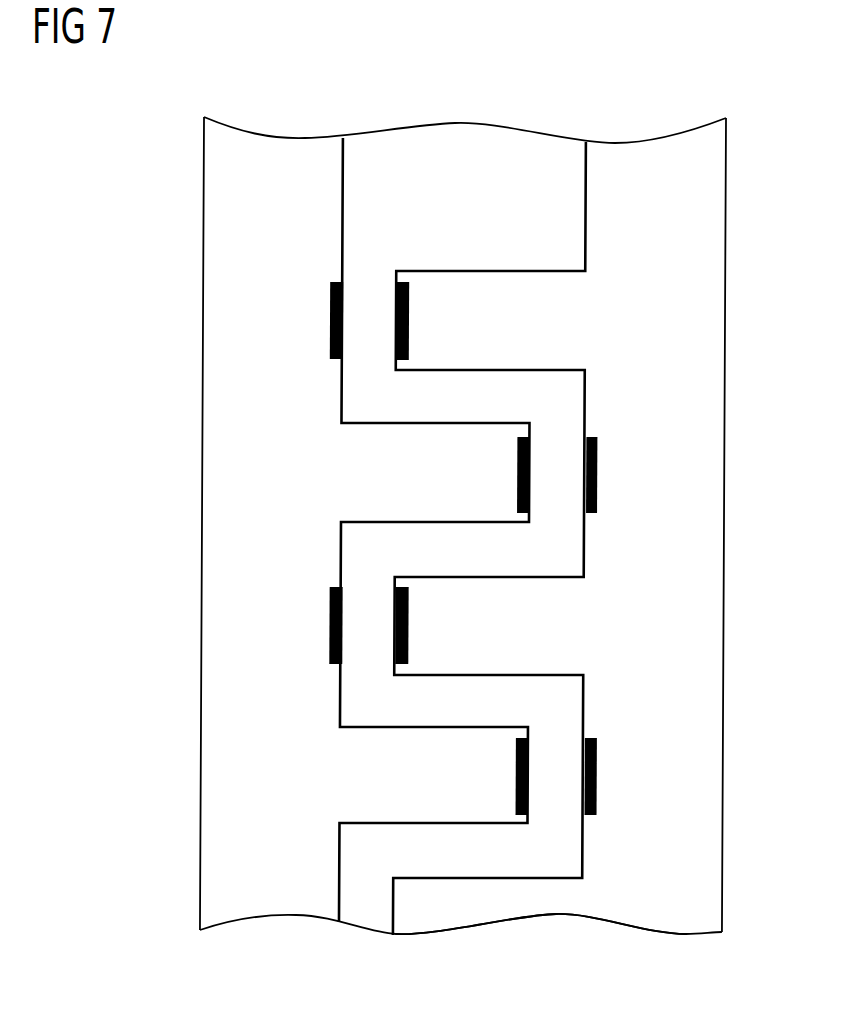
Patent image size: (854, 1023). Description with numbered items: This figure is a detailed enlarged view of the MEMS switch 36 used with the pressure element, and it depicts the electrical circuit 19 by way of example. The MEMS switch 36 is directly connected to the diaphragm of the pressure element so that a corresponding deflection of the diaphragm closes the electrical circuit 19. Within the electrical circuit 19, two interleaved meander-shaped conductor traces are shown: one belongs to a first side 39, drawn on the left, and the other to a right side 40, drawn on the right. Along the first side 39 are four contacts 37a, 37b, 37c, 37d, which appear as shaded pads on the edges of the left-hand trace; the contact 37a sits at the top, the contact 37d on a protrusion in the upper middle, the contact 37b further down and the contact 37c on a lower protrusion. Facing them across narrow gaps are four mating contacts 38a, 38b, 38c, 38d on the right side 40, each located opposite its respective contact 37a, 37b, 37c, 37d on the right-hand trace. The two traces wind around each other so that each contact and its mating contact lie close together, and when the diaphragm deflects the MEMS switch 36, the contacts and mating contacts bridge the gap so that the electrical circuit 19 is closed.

The electrical circuit 19 is at (490, 146).
The MEMS switch 36 is at (452, 920).
The contact 37a is at (330, 320).
The contact 37b is at (329, 628).
The contact 37c is at (515, 782).
The contact 37d is at (517, 478).
The mating contact 38a is at (410, 320).
The mating contact 38b is at (409, 626).
The mating contact 38c is at (596, 779).
The mating contact 38d is at (597, 476).
The first side 39 is at (212, 703).
The right side 40 is at (711, 705).